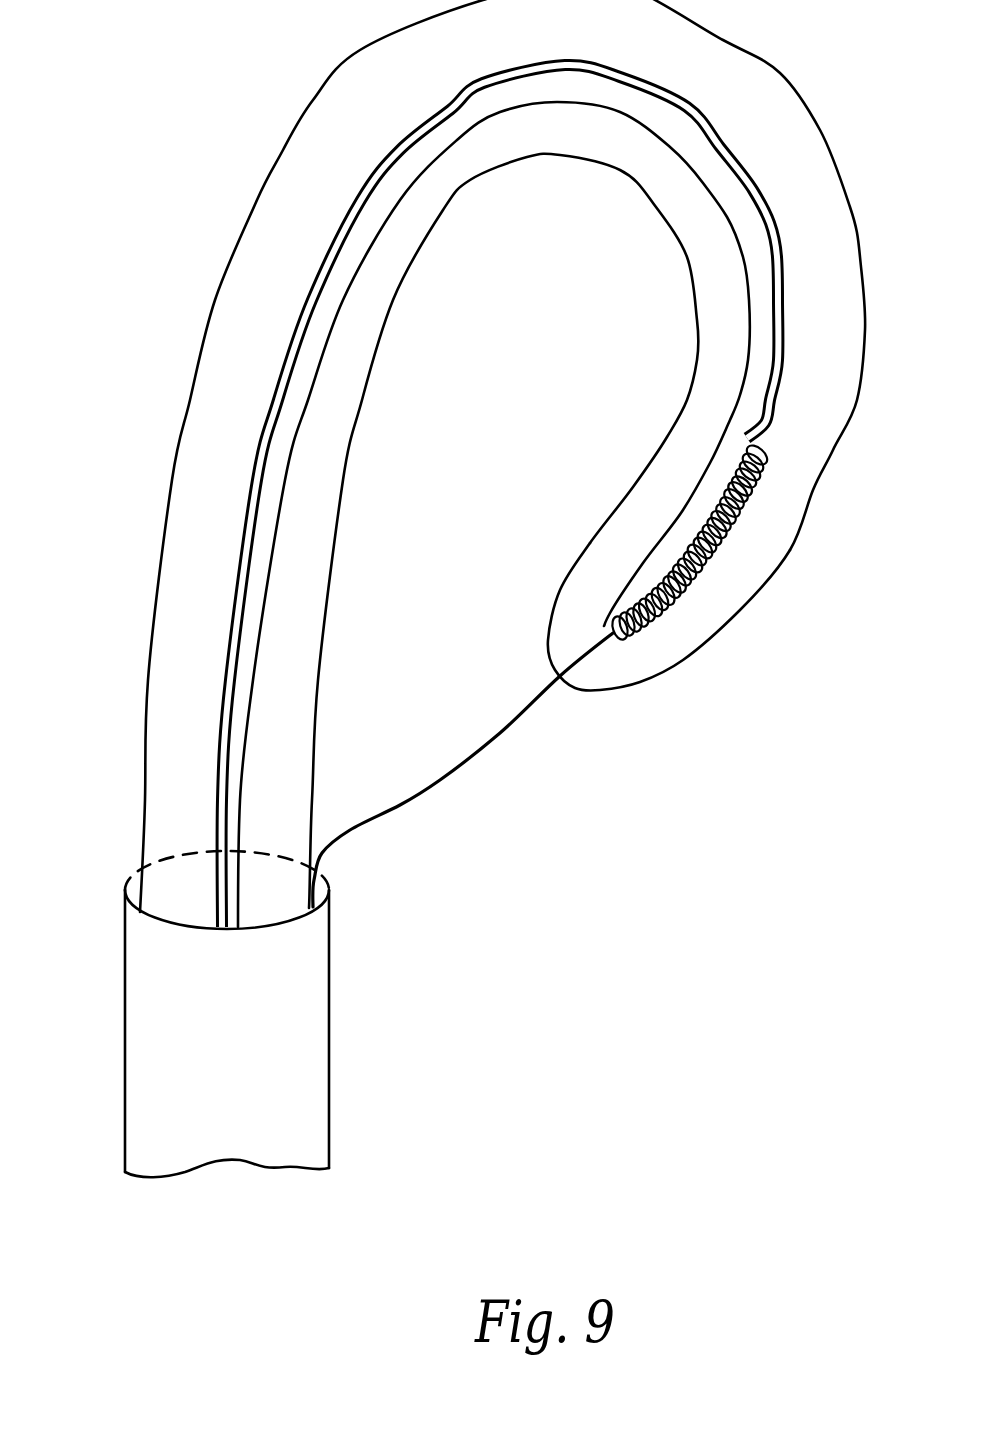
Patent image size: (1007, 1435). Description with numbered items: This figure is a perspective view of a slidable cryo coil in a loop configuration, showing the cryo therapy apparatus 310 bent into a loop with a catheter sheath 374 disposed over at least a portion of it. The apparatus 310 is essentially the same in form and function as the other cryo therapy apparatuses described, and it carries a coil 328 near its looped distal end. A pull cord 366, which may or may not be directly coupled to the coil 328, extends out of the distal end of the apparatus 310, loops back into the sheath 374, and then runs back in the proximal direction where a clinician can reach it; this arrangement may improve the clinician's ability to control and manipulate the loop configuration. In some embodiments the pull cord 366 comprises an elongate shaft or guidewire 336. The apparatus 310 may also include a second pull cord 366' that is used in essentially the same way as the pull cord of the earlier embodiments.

The cryo therapy apparatus 310 is at (243, 79).
The second pull cord 366' is at (494, 514).
The coil 328 is at (763, 470).
The elongate shaft or guidewire 336 is at (555, 697).
The pull cord 366 is at (500, 496).
The catheter sheath 374 is at (125, 1010).